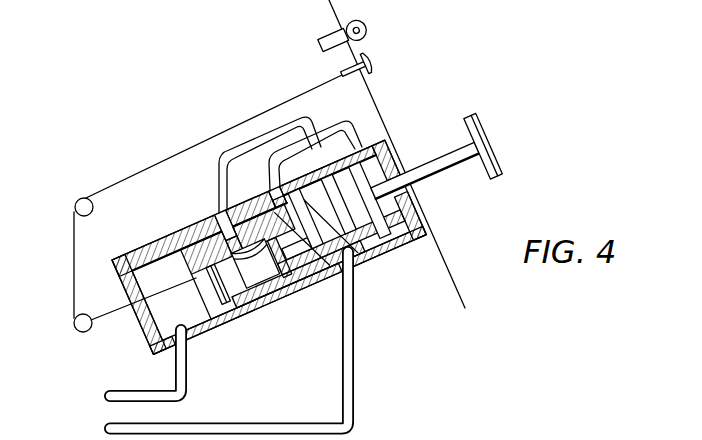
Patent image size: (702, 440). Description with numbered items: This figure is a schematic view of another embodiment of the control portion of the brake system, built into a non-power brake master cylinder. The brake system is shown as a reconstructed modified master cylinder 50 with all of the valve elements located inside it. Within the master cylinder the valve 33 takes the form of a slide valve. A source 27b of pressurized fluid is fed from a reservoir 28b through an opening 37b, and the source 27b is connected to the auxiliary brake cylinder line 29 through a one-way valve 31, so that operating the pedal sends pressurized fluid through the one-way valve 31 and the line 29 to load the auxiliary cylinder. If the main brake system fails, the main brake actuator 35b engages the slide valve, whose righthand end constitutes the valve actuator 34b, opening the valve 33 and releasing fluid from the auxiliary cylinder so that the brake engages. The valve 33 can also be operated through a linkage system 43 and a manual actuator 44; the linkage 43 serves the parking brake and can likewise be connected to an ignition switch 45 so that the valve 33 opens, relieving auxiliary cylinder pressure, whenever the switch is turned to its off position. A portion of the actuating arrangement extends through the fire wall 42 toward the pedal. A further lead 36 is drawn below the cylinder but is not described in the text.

The source of pressurized fluid 27b is at (363, 244).
The reservoir 28b is at (359, 109).
The auxiliary brake cylinder line 29 is at (188, 376).
The one-way valve 31 is at (274, 297).
The valve 33 is at (181, 212).
The valve actuator 34b is at (286, 283).
The main brake actuator 35b is at (499, 160).
The lead wire 36 is at (358, 394).
The opening 37b is at (343, 207).
The fire wall 42 is at (380, 106).
The linkage system 43 is at (72, 252).
The manual actuator 44 is at (382, 61).
The ignition switch 45 is at (313, 34).
The modified master cylinder 50 is at (127, 336).